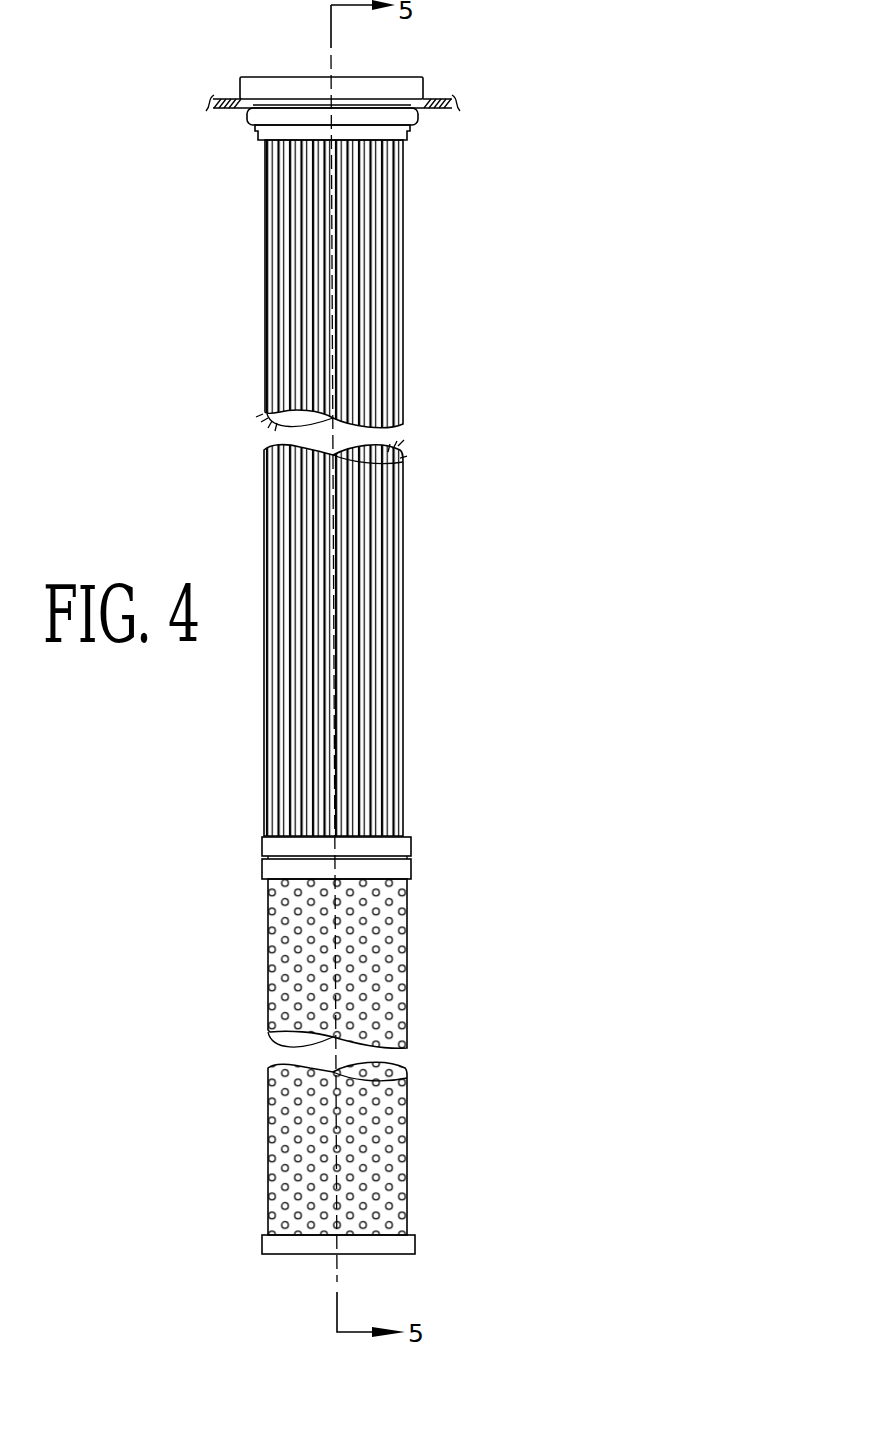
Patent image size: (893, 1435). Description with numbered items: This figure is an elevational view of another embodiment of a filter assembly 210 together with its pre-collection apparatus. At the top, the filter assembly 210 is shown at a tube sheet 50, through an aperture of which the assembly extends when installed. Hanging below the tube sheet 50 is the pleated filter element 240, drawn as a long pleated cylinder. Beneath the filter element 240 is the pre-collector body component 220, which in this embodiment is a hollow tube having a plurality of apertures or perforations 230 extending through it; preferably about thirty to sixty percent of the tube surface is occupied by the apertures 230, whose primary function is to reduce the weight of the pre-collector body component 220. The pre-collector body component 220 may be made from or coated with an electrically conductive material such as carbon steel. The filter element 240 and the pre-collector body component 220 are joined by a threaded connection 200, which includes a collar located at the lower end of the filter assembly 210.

The tube sheet 50 is at (433, 99).
The filter assembly 210 is at (236, 519).
The pleated filter element 240 is at (405, 768).
The threaded connection 200 is at (247, 836).
The pre-collector body component 220 is at (409, 910).
The apertures or perforations 230 is at (392, 938).